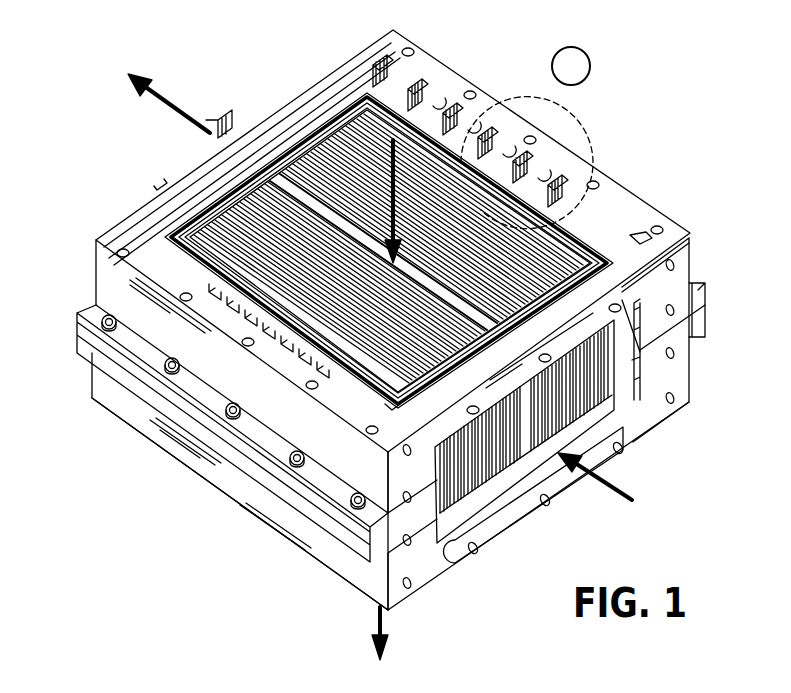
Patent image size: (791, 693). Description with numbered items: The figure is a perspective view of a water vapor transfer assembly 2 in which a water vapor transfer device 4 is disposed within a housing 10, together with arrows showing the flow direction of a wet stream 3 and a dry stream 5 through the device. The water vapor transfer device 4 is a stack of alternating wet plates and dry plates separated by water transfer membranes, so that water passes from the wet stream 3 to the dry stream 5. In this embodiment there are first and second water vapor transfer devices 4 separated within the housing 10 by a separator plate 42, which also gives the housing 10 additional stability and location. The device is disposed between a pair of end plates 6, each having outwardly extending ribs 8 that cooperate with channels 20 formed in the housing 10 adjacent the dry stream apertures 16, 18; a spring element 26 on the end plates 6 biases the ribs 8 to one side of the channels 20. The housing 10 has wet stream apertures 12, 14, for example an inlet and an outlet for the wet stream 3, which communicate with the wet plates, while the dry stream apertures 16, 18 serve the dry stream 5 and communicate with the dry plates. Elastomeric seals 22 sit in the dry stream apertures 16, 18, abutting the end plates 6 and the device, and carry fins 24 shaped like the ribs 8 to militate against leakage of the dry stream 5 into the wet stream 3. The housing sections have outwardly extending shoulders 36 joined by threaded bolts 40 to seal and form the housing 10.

The water vapor transfer assembly 2 is at (108, 66).
The wet stream 3 is at (177, 108).
The water vapor transfer device 4 is at (397, 168).
The dry stream 5 is at (349, 176).
The end plates 6 is at (520, 115).
The outwardly extending ribs 8 is at (475, 150).
The housing 10 is at (642, 300).
The wet stream aperture 12 is at (598, 383).
The wet stream aperture 14 is at (118, 182).
The dry stream aperture 16 is at (281, 264).
The dry stream aperture 18 is at (318, 580).
The channels 20 is at (568, 190).
The elastomeric seals 22 is at (642, 240).
The fins 24 is at (288, 353).
The spring element 26 is at (650, 366).
The outwardly extending shoulder 36 is at (161, 402).
The threaded bolts 40 is at (293, 460).
The separator plate 42 is at (305, 198).